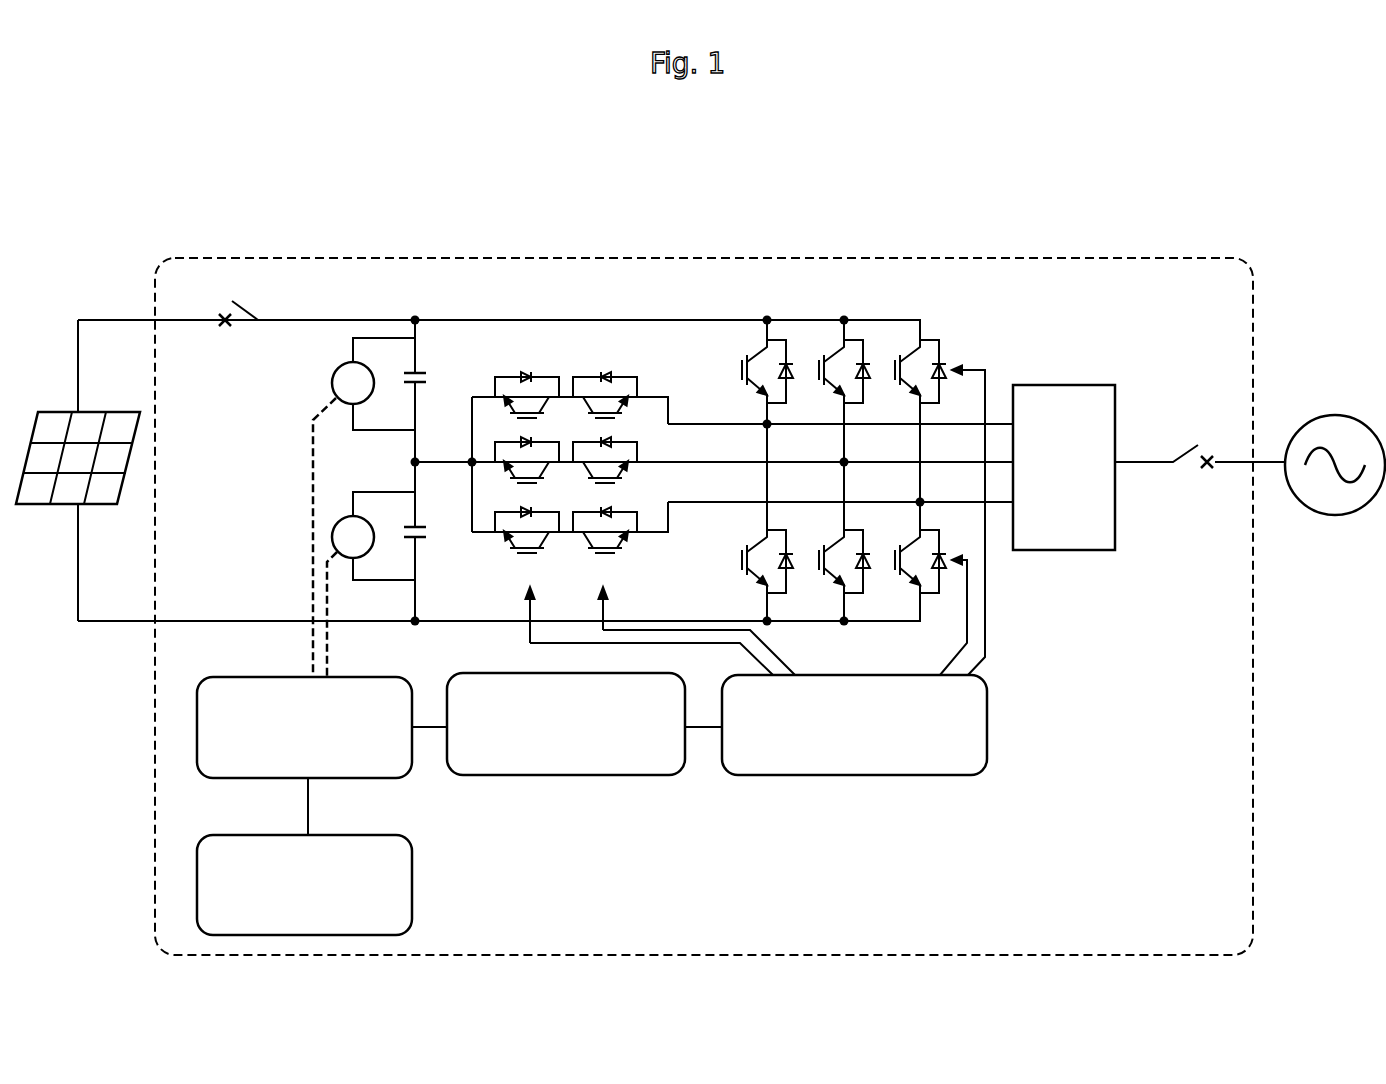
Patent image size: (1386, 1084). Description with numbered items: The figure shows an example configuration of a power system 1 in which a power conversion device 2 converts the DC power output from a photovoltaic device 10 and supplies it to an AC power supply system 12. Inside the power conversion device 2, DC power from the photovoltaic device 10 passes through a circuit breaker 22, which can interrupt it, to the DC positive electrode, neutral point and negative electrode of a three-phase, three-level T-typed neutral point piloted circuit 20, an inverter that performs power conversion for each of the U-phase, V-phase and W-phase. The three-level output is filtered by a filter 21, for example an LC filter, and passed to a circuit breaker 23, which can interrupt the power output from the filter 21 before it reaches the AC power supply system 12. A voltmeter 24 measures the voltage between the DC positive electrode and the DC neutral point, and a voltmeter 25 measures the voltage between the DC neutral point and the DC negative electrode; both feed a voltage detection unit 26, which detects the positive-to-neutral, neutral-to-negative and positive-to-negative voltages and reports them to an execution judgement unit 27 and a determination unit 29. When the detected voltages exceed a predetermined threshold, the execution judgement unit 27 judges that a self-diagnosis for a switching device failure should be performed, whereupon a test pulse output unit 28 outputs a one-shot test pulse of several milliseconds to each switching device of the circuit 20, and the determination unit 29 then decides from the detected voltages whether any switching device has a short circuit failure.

The power system 1 is at (919, 187).
The power conversion device 2 is at (691, 258).
The photovoltaic device 10 is at (106, 412).
The AC power supply system 12 is at (1331, 410).
The three-level TNPP circuit 20 is at (986, 331).
The filter 21 is at (1061, 384).
The circuit breaker 22 is at (249, 303).
The circuit breaker 23 is at (1197, 445).
The voltmeter 24 is at (332, 376).
The voltmeter 25 is at (372, 545).
The voltage detection unit 26 is at (271, 677).
The execution judgement unit 27 is at (573, 775).
The test pulse output unit 28 is at (884, 775).
The determination unit 29 is at (383, 834).